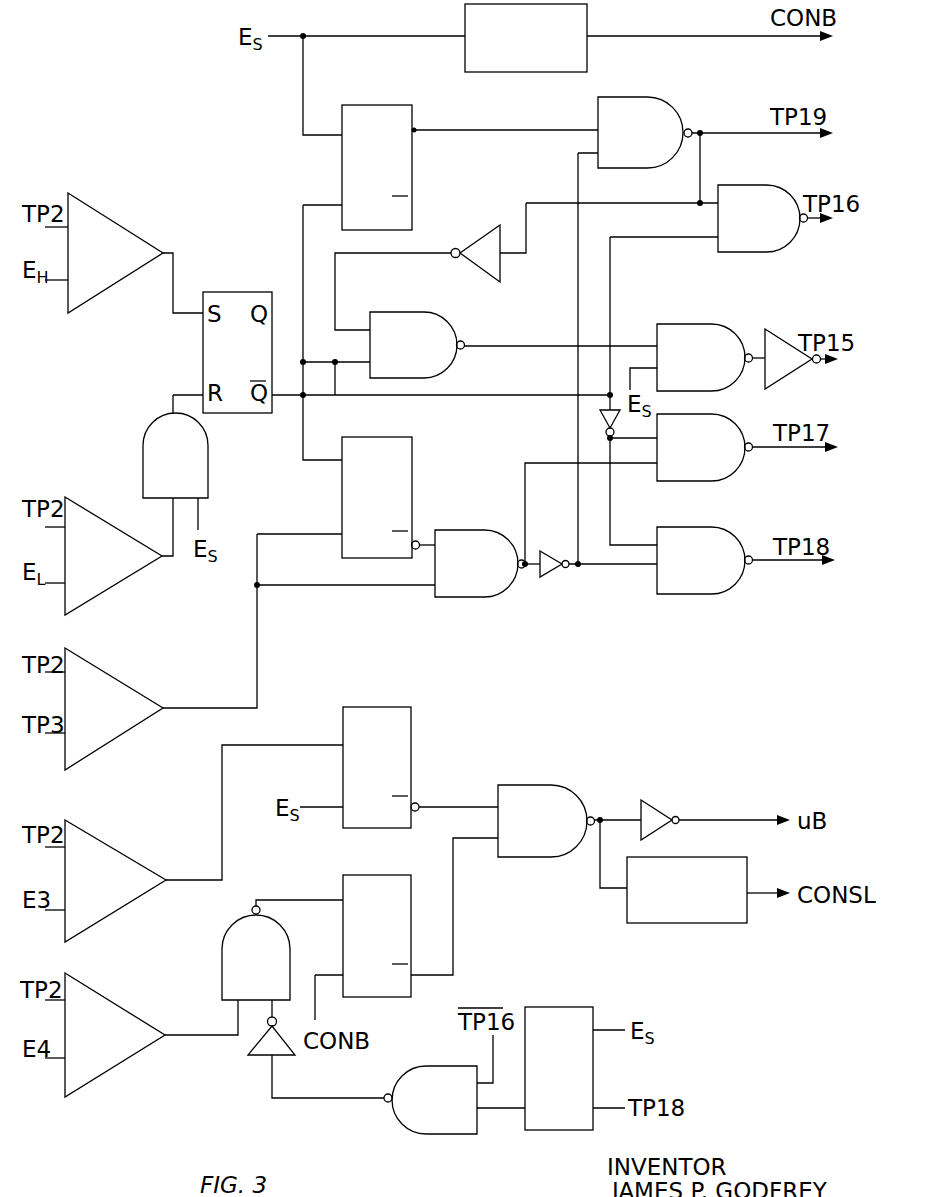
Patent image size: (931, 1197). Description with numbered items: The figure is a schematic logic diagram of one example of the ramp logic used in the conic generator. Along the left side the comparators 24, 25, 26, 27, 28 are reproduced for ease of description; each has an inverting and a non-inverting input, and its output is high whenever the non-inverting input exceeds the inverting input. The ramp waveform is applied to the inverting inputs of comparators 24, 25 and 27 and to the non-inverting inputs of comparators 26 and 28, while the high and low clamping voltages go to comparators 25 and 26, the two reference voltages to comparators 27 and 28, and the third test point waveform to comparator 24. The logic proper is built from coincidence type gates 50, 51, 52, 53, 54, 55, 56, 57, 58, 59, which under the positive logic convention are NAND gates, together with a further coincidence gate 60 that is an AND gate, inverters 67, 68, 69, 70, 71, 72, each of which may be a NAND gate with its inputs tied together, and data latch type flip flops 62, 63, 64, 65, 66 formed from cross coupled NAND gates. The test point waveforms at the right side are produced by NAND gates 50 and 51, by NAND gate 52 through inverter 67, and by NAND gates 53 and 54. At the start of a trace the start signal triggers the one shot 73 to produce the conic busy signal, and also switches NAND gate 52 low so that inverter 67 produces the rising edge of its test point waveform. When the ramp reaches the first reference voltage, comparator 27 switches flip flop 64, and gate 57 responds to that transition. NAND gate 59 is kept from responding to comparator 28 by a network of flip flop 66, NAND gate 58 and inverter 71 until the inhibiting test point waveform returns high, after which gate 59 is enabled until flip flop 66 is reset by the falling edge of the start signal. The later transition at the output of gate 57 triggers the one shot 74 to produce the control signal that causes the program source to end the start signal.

The comparator 24 is at (140, 704).
The comparator 25 is at (126, 246).
The comparator 26 is at (128, 567).
The comparator 27 is at (136, 872).
The comparator 28 is at (125, 1052).
The NAND gate 50 is at (619, 146).
The NAND gate 51 is at (736, 231).
The NAND gate 52 is at (677, 371).
The NAND gate 53 is at (677, 461).
The NAND gate 54 is at (677, 573).
The NAND gate 55 is at (455, 579).
The NAND gate 56 is at (392, 360).
The NAND gate 57 is at (522, 836).
The NAND gate 58 is at (419, 1114).
The NAND gate 59 is at (243, 979).
The AND gate 60 is at (162, 470).
The flip flop 62 is at (364, 175).
The flip flop 63 is at (364, 515).
The flip flop 64 is at (364, 792).
The flip flop 65 is at (364, 960).
The flip flop 66 is at (544, 1080).
The inverter 67 is at (790, 366).
The inverter 68 is at (623, 422).
The inverter 69 is at (556, 568).
The inverter 70 is at (476, 250).
The inverter 71 is at (260, 1052).
The inverter 72 is at (656, 812).
The one shot 73 is at (530, 72).
The one shot 74 is at (715, 923).